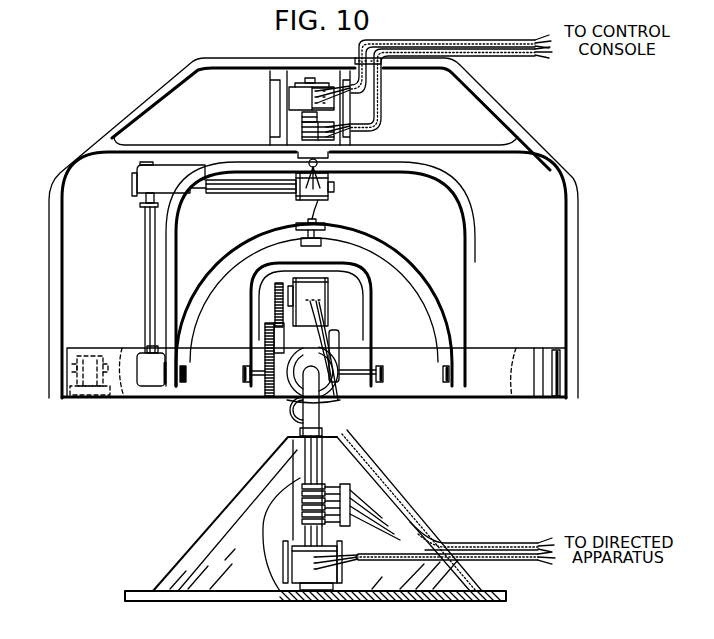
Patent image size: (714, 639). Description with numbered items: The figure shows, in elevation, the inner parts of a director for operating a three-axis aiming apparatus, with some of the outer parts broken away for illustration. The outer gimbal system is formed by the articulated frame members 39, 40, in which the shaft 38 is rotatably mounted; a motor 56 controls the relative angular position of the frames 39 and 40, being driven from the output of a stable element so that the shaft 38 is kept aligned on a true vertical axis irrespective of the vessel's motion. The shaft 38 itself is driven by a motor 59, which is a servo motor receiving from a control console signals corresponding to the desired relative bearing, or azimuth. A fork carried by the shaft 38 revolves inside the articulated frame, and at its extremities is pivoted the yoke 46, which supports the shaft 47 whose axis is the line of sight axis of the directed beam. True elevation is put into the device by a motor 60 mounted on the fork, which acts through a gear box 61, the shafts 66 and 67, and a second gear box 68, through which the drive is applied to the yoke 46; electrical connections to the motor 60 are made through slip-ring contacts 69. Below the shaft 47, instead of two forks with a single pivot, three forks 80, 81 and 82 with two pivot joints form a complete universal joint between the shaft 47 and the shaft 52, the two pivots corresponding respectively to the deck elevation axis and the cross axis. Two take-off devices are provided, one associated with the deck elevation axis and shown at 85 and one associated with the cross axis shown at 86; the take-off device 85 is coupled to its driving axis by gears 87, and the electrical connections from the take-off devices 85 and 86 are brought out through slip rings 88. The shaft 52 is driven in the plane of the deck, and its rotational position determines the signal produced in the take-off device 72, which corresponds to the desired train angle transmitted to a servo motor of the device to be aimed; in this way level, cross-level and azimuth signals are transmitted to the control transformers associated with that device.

The shaft 38 is at (270, 111).
The articulated frame member 39 is at (68, 160).
The articulated frame member 40 is at (552, 396).
The yoke 46 is at (400, 264).
The shaft 47 is at (309, 221).
The shaft 52 is at (322, 428).
The motor 56 is at (96, 353).
The motor 59 is at (294, 95).
The motor 60 is at (333, 198).
The gear box 61 is at (147, 177).
The shaft 66 is at (266, 193).
The shaft 67 is at (144, 257).
The second gear box 68 is at (148, 386).
The slip-ring contacts 69 is at (302, 128).
The take-off device 72 is at (298, 574).
The fork 80 is at (374, 321).
The fork 81 is at (340, 347).
The fork 82 is at (298, 408).
The take-off device 85 is at (331, 292).
The take-off device 86 is at (283, 396).
The gears 87 is at (266, 337).
The slip rings 88 is at (300, 498).